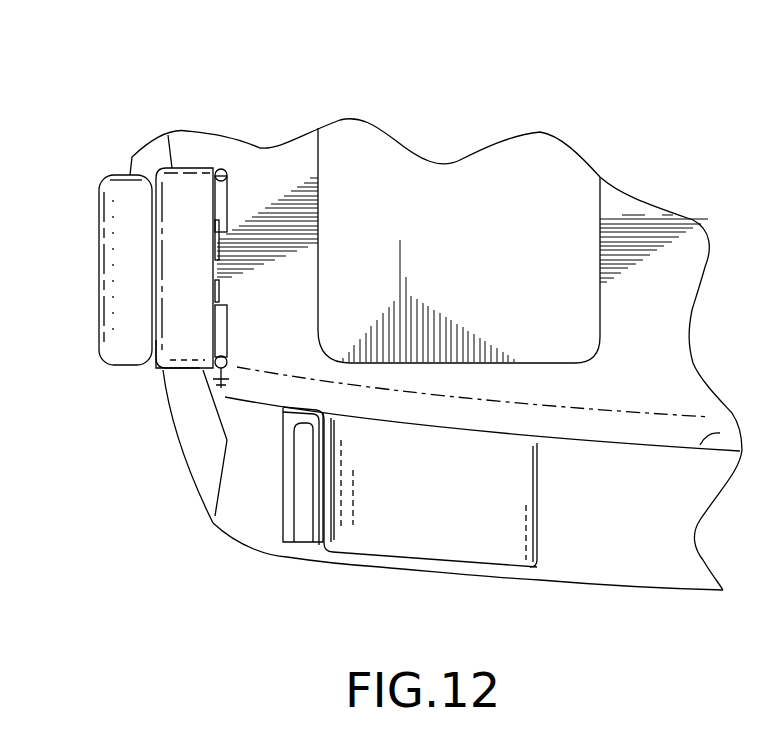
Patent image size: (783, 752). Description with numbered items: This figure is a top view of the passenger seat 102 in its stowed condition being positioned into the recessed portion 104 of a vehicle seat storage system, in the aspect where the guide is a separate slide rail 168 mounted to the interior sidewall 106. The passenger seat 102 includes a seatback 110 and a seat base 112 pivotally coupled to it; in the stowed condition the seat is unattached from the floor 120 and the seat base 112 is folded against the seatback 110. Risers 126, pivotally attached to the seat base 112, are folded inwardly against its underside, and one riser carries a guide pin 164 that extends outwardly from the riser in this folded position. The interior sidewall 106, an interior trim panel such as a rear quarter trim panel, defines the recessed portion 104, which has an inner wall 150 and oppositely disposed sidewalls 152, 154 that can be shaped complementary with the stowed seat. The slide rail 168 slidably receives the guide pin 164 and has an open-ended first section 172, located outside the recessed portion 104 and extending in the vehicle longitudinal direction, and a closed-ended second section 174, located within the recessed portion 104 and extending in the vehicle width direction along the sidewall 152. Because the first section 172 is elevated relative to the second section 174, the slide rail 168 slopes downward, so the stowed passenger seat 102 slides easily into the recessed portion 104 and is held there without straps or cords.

The passenger seat 102 is at (195, 160).
The recessed portion 104 is at (443, 524).
The interior sidewall 106 is at (692, 450).
The seatback 110 is at (125, 185).
The seat base 112 is at (181, 347).
The floor 120 is at (660, 314).
The risers 126 is at (227, 203).
The inner wall 150 is at (368, 556).
The sidewall 152 is at (323, 449).
The sidewall 154 is at (540, 506).
The guide pin 164 is at (211, 418).
The slide rail 168 is at (323, 485).
The first section 172 is at (294, 426).
The second section 174 is at (314, 512).